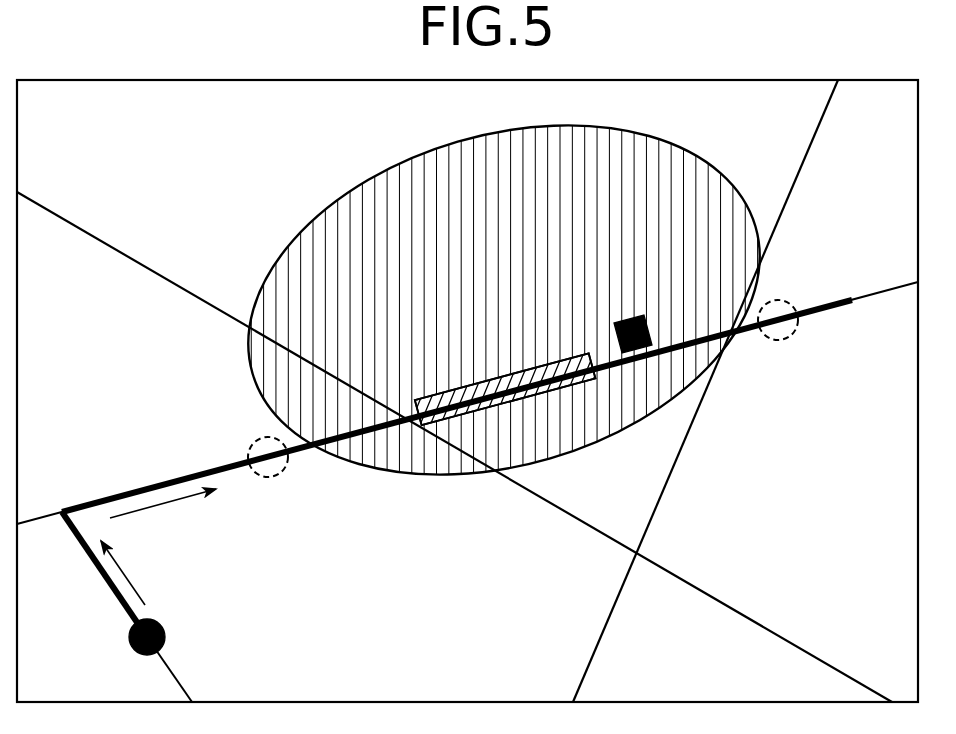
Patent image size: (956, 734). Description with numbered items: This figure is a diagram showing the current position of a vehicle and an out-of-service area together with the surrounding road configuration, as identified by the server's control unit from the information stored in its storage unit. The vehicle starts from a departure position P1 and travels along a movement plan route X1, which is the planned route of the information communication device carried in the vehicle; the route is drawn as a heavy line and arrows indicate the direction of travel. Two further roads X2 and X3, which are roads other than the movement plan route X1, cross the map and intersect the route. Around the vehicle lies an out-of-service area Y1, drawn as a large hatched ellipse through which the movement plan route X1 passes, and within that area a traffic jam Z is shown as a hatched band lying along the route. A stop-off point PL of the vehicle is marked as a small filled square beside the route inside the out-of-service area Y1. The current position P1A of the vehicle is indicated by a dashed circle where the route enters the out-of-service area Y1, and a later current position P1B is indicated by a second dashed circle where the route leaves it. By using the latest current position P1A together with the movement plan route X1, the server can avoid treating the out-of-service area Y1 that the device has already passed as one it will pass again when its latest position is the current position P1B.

The movement plan route X1 is at (147, 487).
The road X2 is at (106, 243).
The road X3 is at (808, 152).
The departure position P1 is at (160, 620).
The current position P1A is at (258, 438).
The current position P1B is at (781, 301).
The out-of-service area Y1 is at (668, 214).
The traffic jam Z is at (500, 378).
The stop-off point PL is at (625, 320).